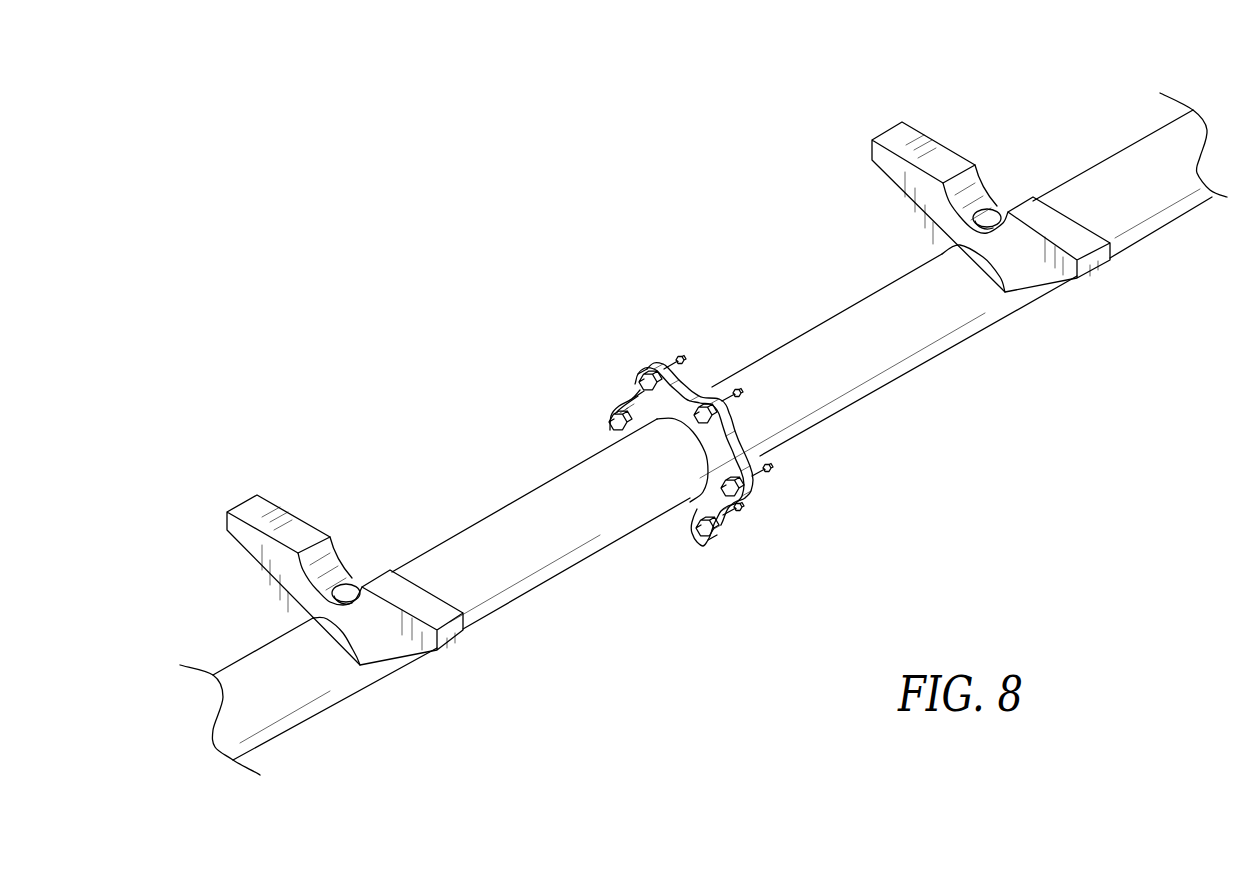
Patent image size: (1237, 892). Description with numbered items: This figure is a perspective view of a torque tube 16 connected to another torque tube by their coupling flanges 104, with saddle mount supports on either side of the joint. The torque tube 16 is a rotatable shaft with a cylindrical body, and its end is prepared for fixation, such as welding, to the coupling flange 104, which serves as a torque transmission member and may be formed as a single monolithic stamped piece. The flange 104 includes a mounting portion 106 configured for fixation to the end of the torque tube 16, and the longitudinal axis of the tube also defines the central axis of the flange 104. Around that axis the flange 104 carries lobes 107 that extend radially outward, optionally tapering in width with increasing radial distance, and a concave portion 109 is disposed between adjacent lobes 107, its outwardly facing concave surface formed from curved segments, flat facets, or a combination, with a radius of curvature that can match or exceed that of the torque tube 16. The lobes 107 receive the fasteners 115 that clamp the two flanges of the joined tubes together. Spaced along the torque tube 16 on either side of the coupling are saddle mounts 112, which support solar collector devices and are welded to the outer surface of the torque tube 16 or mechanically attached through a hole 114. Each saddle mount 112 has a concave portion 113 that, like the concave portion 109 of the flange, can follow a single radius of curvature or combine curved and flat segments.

The torque tube 16 is at (972, 353).
The coupling flange 104 is at (716, 357).
The mounting portion 106 is at (645, 407).
The lobes 107 is at (658, 358).
The concave portion 109 is at (688, 388).
The saddle mount 112 is at (258, 502).
The concave portion 113 is at (330, 553).
The hole 114 is at (350, 590).
The bolts 115 is at (725, 533).